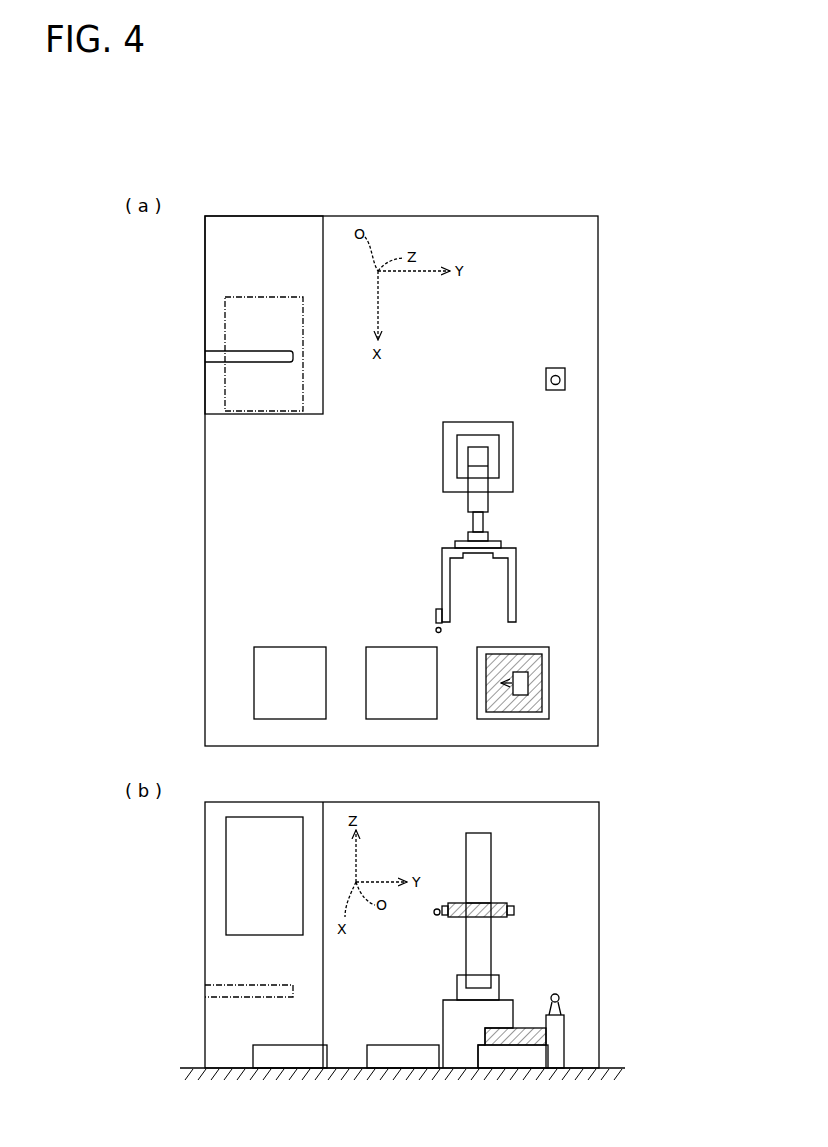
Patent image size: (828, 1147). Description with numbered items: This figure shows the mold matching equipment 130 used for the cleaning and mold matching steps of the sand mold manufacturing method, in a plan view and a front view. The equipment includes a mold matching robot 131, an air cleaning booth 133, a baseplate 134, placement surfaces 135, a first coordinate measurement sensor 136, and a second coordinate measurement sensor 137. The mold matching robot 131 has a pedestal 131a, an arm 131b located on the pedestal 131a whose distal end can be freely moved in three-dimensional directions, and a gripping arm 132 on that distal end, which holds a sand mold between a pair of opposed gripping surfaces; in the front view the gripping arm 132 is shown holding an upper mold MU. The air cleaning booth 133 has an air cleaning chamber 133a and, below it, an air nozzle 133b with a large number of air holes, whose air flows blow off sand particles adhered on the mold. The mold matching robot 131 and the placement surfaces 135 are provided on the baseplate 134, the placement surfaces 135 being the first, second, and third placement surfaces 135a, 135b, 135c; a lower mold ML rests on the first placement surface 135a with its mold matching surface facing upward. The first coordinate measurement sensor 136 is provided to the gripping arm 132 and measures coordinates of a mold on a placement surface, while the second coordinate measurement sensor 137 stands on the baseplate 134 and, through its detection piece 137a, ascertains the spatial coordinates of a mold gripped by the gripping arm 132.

The mold matching equipment 130 is at (550, 283).
The mold matching robot 131 is at (520, 745).
The pedestal 131a is at (443, 453).
The arm 131b is at (478, 497).
The gripping arm 132 is at (516, 580).
The air cleaning booth 133 is at (241, 253).
The air cleaning chamber 133a is at (247, 318).
The air nozzle 133b is at (258, 363).
The baseplate 134 is at (268, 506).
The placement surfaces 135 is at (458, 808).
The first placement surface 135a is at (530, 647).
The second placement surface 135b is at (395, 656).
The third placement surface 135c is at (297, 656).
The first coordinate measurement sensor 136 is at (436, 612).
The second coordinate measurement sensor 137 is at (566, 378).
The detection piece 137a is at (555, 994).
The lower mold ML is at (530, 680).
The upper mold MU is at (478, 900).